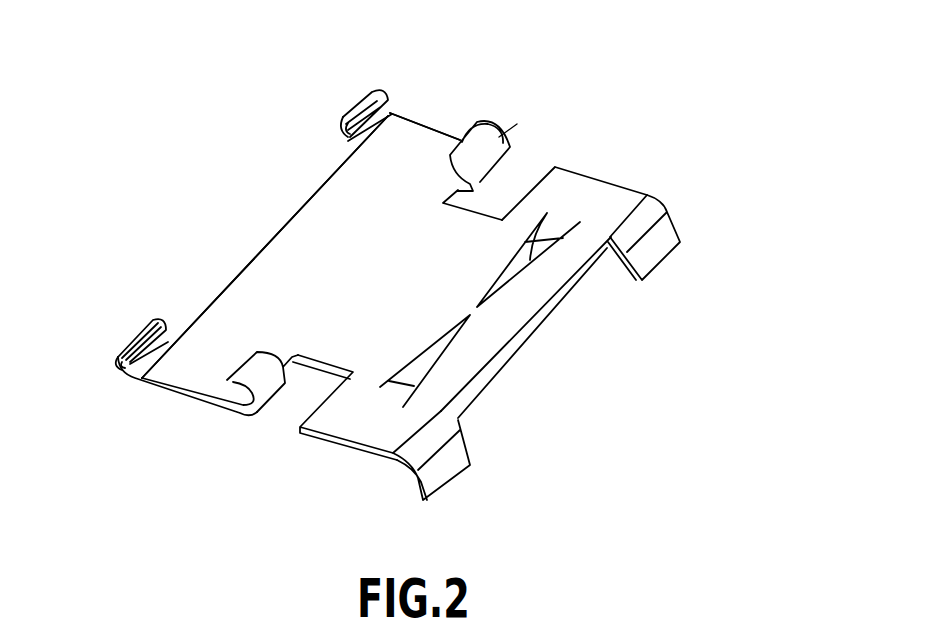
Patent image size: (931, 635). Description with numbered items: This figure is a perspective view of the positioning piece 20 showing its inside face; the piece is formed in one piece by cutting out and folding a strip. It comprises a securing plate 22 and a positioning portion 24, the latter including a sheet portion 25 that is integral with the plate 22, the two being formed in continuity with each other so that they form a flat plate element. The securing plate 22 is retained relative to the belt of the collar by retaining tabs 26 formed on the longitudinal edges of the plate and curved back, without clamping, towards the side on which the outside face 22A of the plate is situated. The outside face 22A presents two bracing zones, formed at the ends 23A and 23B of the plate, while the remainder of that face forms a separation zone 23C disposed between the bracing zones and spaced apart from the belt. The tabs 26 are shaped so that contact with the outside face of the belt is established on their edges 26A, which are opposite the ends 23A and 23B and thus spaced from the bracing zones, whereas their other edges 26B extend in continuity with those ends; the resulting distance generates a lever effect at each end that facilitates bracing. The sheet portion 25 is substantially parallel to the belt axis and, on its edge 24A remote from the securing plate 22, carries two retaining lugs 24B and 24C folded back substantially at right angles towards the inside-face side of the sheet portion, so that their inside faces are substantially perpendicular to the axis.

The positioning piece 20 is at (511, 77).
The securing plate 22 is at (224, 260).
The outside face of the plate 22A is at (290, 238).
The end of the plate 23A is at (427, 118).
The end of the plate 23B is at (183, 398).
The separation zone 23C is at (368, 260).
The positioning portion 24 is at (579, 156).
The edge of the sheet portion 24A is at (541, 312).
The retaining lug 24B is at (656, 257).
The retaining lug 24C is at (438, 477).
The sheet portion 25 is at (483, 340).
The retaining tabs 26 is at (352, 104).
The edges of the retaining tabs 26A is at (347, 133).
The edges of the retaining tabs 26B is at (387, 93).